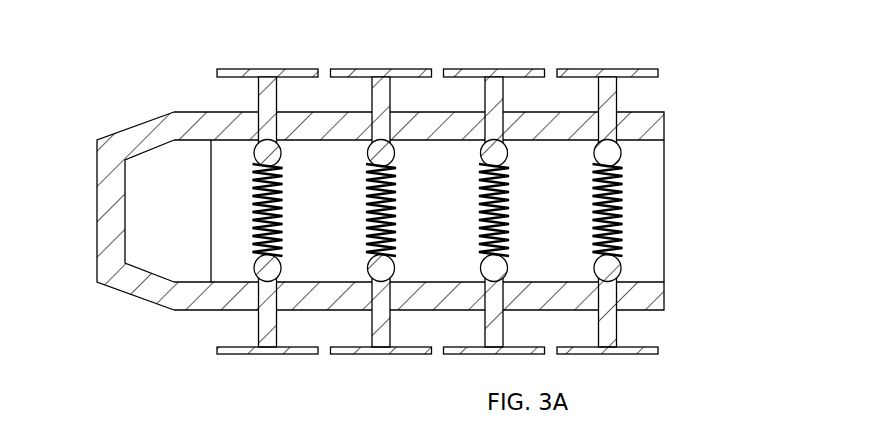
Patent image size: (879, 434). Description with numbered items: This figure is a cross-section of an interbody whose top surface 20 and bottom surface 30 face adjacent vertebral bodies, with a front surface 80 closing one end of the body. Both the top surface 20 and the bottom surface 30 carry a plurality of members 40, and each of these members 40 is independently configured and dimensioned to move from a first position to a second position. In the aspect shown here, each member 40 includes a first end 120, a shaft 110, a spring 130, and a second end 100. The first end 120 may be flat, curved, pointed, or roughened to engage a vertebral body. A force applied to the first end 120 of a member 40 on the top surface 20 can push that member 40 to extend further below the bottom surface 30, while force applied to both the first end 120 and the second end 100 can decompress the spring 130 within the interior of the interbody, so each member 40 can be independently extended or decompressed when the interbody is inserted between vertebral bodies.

The top surface 20 is at (185, 126).
The bottom surface 30 is at (175, 312).
The members 40 is at (493, 66).
The front surface 80 is at (102, 213).
The second end 100 is at (612, 107).
The shaft 110 is at (607, 77).
The first end 120 is at (658, 352).
The spring 130 is at (623, 208).